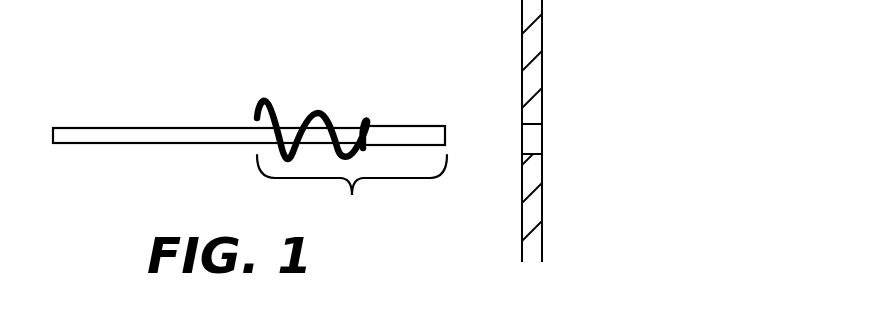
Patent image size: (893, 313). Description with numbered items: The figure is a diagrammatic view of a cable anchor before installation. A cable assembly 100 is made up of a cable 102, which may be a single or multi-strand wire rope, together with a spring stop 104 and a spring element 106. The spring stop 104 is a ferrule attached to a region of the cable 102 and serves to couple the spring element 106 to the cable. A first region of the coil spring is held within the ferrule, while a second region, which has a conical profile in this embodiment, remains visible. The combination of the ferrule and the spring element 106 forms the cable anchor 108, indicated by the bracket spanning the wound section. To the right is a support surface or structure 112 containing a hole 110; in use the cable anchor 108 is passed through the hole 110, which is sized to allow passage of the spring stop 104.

The cable assembly 100 is at (140, 176).
The cable 102 is at (110, 128).
The spring stop 104 is at (418, 126).
The spring element 106 is at (333, 116).
The cable anchor 108 is at (352, 192).
The hole 110 is at (542, 143).
The support surface or structure 112 is at (522, 52).